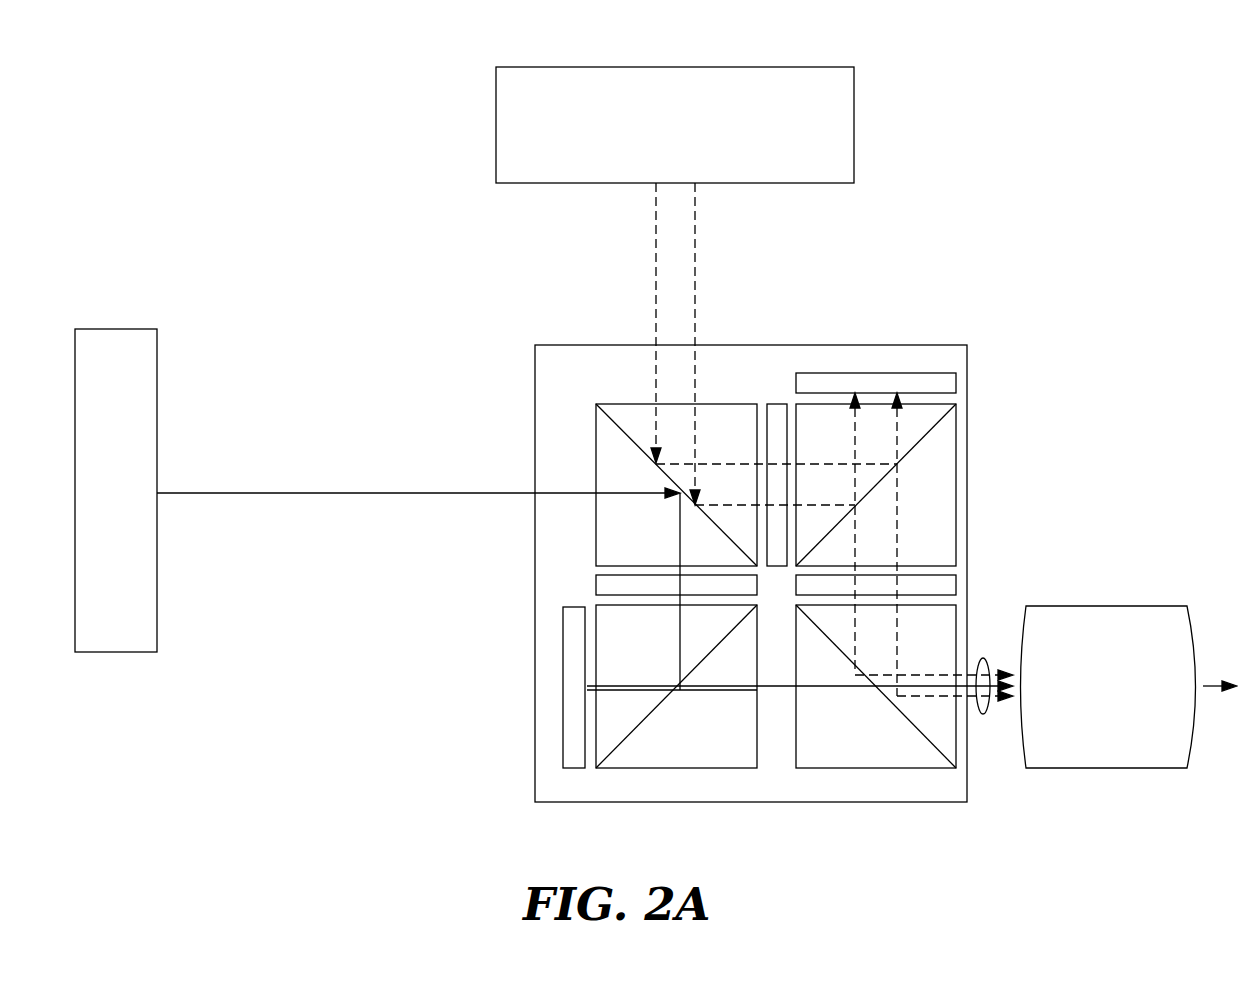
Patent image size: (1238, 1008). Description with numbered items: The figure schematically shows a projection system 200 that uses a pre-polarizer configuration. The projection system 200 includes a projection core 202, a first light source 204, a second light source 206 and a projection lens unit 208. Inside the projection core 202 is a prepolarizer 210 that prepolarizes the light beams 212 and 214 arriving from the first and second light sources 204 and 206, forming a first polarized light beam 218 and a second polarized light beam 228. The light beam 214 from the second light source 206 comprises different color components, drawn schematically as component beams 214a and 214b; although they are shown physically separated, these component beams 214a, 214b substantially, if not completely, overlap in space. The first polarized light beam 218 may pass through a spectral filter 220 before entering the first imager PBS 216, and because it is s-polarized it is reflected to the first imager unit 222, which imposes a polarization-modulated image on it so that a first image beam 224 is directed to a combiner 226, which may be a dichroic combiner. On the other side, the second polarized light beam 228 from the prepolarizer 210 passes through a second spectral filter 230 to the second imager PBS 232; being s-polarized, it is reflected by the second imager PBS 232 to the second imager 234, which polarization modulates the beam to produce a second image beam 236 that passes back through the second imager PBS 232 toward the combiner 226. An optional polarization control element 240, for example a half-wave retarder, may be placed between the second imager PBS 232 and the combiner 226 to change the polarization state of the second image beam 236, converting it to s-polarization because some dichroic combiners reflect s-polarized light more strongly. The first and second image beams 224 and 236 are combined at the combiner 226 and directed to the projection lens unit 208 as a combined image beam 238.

The projection system 200 is at (216, 104).
The projection core 202 is at (966, 363).
The first light source 204 is at (157, 385).
The second light source 206 is at (496, 157).
The projection lens unit 208 is at (1105, 606).
The prepolarizer 210 is at (595, 455).
The light beam 212 is at (301, 493).
The light beam 214 is at (679, 344).
The component beam 214a is at (656, 270).
The component beam 214b is at (750, 344).
The first imager PBS 216 is at (650, 768).
The first polarized light beam 218 is at (680, 630).
The spectral filter 220 is at (595, 587).
The first imager unit 222 is at (563, 722).
The first image beam 224 is at (777, 690).
The combiner 226 is at (855, 768).
The second polarized light beam 228 is at (713, 505).
The second spectral filter 230 is at (778, 404).
The second imager PBS 232 is at (957, 437).
The second imager 234 is at (872, 373).
The second image beam 236 is at (865, 540).
The combined image beam 238 is at (982, 715).
The polarization control element 240 is at (956, 585).